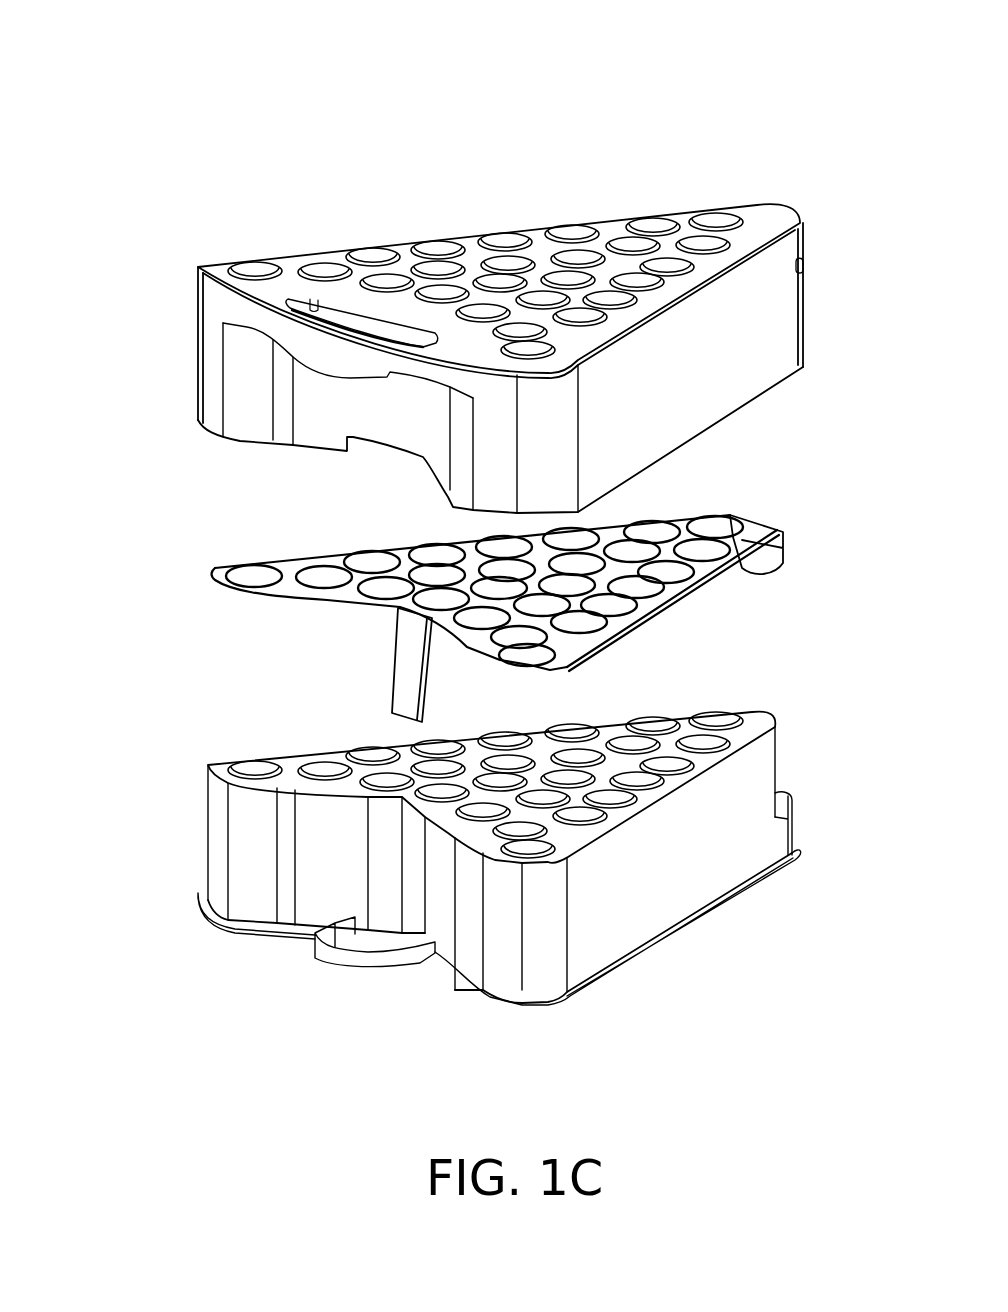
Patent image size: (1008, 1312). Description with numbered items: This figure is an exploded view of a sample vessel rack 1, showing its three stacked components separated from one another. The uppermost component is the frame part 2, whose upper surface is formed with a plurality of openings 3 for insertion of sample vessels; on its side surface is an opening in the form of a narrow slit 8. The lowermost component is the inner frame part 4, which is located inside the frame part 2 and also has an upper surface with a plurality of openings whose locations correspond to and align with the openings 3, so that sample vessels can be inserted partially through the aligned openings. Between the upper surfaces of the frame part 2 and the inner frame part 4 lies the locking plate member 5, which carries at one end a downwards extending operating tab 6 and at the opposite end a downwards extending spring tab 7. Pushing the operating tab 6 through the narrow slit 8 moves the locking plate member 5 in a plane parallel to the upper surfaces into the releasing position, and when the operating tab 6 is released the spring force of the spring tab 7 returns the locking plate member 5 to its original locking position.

The sample vessel rack 1 is at (105, 158).
The frame part 2 is at (740, 360).
The openings 3 is at (571, 282).
The inner frame part 4 is at (677, 887).
The locking plate member 5 is at (653, 604).
The operating tab 6 is at (777, 560).
The spring tab 7 is at (408, 677).
The narrow slit 8 is at (805, 262).